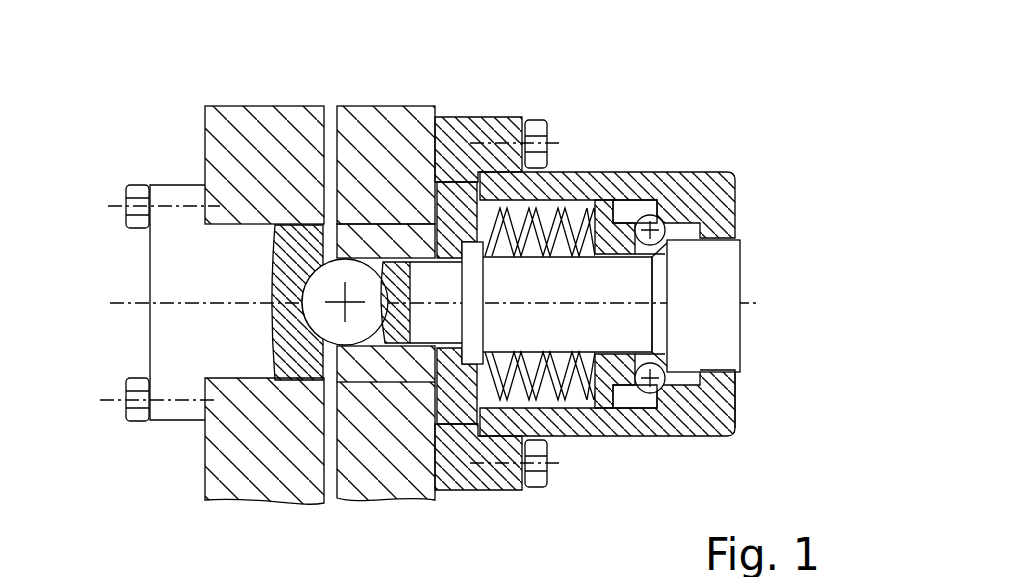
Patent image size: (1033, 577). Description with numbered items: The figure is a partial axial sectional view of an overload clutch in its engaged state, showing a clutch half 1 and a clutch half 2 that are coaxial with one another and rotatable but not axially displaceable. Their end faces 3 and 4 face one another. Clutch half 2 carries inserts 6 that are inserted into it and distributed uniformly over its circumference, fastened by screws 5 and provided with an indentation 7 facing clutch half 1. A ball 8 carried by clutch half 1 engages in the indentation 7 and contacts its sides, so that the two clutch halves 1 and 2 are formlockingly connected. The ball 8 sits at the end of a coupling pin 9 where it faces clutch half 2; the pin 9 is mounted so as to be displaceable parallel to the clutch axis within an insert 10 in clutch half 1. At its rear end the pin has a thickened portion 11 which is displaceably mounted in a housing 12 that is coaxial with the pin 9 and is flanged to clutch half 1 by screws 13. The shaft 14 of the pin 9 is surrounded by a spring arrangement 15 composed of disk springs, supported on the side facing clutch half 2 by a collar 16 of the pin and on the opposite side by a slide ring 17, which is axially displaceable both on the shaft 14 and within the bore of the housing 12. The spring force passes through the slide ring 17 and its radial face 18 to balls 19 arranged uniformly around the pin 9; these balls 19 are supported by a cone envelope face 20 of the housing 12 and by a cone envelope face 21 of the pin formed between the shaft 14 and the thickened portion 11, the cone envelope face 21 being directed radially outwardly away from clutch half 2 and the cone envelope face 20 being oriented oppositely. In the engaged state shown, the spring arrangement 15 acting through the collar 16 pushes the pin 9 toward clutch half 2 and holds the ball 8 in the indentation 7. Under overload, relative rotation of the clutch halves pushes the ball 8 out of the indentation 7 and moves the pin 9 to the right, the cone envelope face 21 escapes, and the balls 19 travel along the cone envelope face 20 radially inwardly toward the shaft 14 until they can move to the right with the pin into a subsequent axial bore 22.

The clutch half 1 is at (372, 110).
The clutch half 2 is at (253, 112).
The end face 3 is at (345, 493).
The end face 4 is at (312, 470).
The screws 5 is at (135, 185).
The inserts 6 is at (175, 262).
The indentation 7 is at (275, 338).
The ball 8 is at (340, 345).
The coupling pin 9 is at (440, 272).
The insert 10 is at (412, 365).
The thickened portion 11 is at (700, 260).
The housing 12 is at (652, 178).
The screws 13 is at (548, 140).
The shaft 14 is at (598, 400).
The spring arrangement 15 is at (568, 215).
The collar 16 is at (487, 420).
The slide ring 17 is at (595, 325).
The radial face 18 is at (670, 352).
The balls 19 is at (660, 218).
The cone envelope face 20 is at (730, 413).
The cone envelope face 21 is at (668, 290).
The axial bore 22 is at (725, 204).